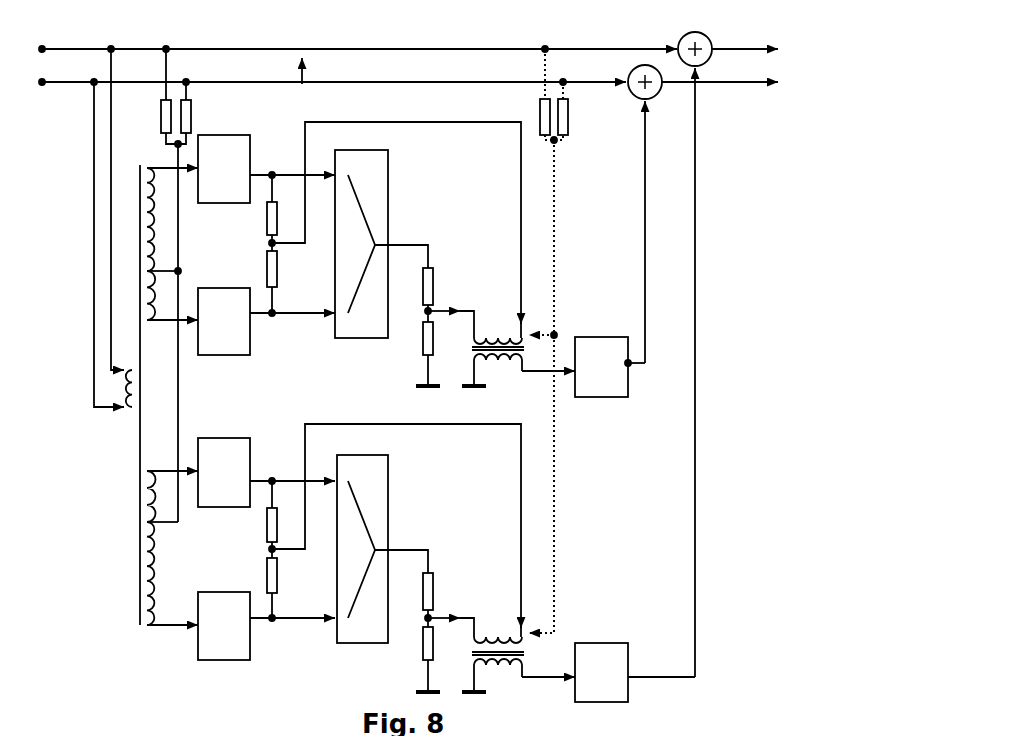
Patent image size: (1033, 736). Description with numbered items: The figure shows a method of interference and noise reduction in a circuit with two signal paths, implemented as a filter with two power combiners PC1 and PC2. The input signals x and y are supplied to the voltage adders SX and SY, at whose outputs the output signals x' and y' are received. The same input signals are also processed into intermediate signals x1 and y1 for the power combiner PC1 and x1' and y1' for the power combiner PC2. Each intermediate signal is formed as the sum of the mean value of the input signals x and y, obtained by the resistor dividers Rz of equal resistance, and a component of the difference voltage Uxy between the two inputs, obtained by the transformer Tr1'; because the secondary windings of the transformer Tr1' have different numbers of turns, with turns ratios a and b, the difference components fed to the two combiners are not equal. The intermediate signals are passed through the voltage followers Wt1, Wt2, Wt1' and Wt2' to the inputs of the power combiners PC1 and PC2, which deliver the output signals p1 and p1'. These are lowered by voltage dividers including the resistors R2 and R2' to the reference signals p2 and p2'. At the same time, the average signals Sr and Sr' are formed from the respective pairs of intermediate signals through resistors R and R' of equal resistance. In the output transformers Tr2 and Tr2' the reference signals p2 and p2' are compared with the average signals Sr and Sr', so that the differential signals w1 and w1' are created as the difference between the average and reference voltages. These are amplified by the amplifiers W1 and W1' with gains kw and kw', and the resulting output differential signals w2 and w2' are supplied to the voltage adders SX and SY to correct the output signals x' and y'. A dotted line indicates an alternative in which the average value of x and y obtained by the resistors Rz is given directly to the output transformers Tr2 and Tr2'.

The input signal x is at (358, 40).
The input signal y is at (332, 74).
The output signal x' is at (745, 38).
The output signal y' is at (720, 72).
The voltage between the signals x and y Uxy is at (281, 71).
The voltage adder SX is at (690, 341).
The voltage adder SY is at (633, 210).
The resistor divider Rz is at (367, 341).
The transformer Tr1' is at (146, 337).
The turns ratio a is at (166, 395).
The turns ratio b is at (166, 404).
The voltage follower Wt1 is at (198, 169).
The voltage follower Wt2 is at (198, 321).
The voltage follower Wt1' is at (198, 472).
The voltage follower Wt2' is at (198, 626).
The intermediate signal x1 is at (292, 164).
The intermediate signal y1 is at (292, 302).
The intermediate signal x1' is at (292, 469).
The intermediate signal y1' is at (292, 606).
The resistor R is at (281, 244).
The resistor R' is at (284, 549).
The average signal Sr is at (396, 217).
The average signal Sr' is at (396, 530).
The power combiner PC1 is at (381, 244).
The power combiner PC2 is at (382, 549).
The output signal p1 is at (429, 269).
The reference signal p2 is at (466, 295).
The output signal p1' is at (431, 573).
The reference signal p2' is at (458, 588).
The resistor R2 is at (439, 354).
The resistor R2' is at (428, 659).
The output transformer Tr2 is at (493, 343).
The output transformer Tr2' is at (493, 639).
The differential signal w1 is at (548, 363).
The differential signal w1' is at (548, 667).
The amplifier W1 is at (601, 367).
The amplifier W1' is at (601, 672).
The output differential signal w2 is at (631, 317).
The output differential signal w2' is at (676, 473).